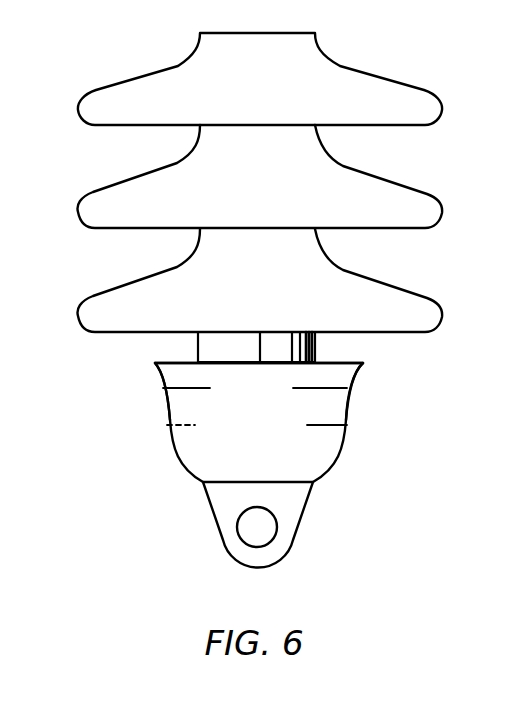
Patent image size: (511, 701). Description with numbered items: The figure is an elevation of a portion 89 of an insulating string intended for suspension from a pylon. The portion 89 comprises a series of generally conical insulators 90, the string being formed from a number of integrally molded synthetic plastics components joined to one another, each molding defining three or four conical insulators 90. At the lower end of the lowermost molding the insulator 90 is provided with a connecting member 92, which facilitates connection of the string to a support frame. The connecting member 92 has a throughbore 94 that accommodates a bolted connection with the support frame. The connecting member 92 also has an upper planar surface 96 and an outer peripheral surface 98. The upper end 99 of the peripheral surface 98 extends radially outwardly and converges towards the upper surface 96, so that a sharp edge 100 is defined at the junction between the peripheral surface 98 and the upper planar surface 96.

The portion of an insulating string 89 is at (271, 299).
The conical insulators 90 is at (423, 116).
The connecting member 92 is at (238, 472).
The throughbore 94 is at (240, 541).
The upper planar surface 96 is at (170, 362).
The outer peripheral surface 98 is at (163, 392).
The upper end of the peripheral surface 99 is at (153, 367).
The sharp edge 100 is at (363, 363).